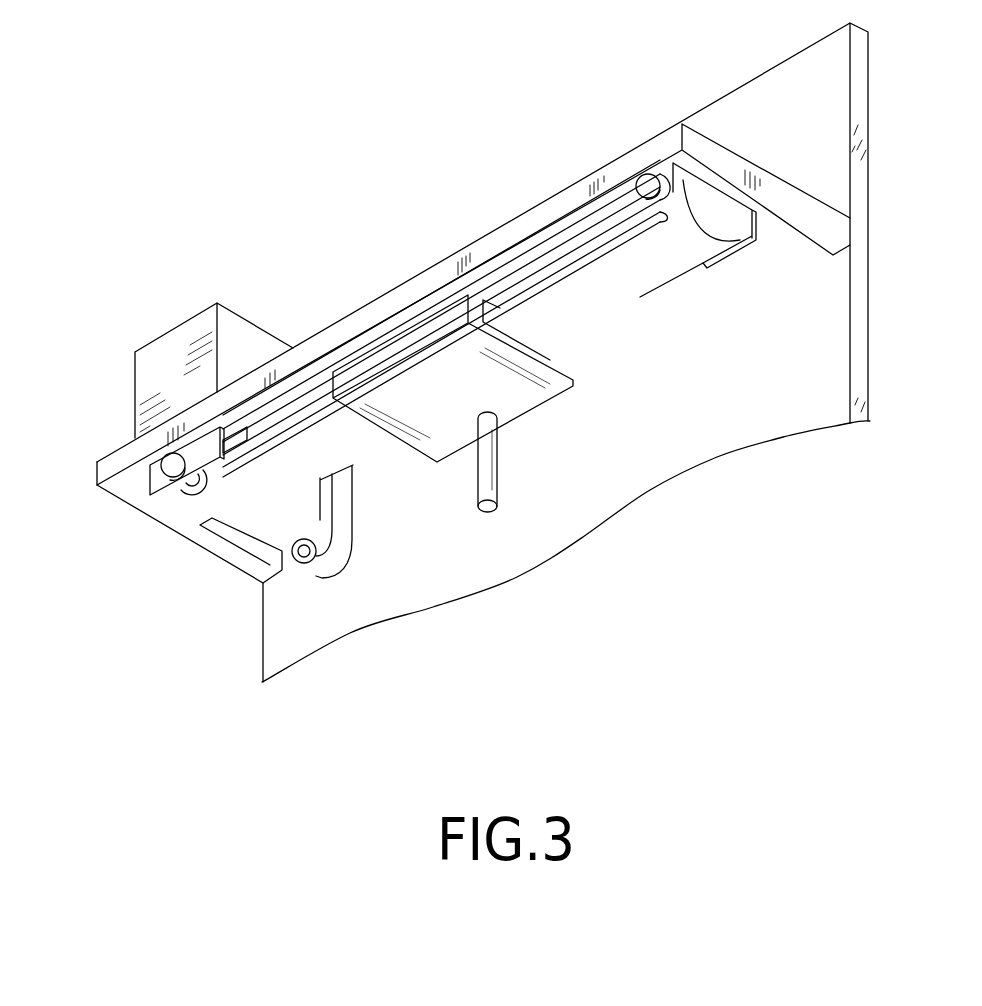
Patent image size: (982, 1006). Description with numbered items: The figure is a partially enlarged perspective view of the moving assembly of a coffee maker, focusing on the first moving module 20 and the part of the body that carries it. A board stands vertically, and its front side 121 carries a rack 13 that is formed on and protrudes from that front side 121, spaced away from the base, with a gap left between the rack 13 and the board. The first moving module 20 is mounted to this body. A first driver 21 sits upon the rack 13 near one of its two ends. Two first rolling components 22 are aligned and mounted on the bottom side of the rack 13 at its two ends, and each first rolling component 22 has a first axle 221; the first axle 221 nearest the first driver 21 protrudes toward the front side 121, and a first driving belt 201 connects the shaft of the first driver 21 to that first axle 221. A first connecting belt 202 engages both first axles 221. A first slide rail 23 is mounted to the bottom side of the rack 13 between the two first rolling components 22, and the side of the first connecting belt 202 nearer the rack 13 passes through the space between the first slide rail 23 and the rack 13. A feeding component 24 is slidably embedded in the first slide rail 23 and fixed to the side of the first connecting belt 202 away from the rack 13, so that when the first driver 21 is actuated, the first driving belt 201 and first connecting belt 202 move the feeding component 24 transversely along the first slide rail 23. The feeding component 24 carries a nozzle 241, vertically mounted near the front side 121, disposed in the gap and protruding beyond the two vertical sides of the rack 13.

The front side 121 is at (783, 100).
The rack 13 is at (122, 462).
The first slide rail 23 is at (528, 260).
The first moving module 20 is at (160, 297).
The first driver 21 is at (138, 378).
The first rolling component 22 is at (149, 483).
The first axle 221 is at (647, 187).
The feeding component 24 is at (538, 398).
The nozzle 241 is at (490, 488).
The first driving belt 201 is at (342, 517).
The first connecting belt 202 is at (233, 453).